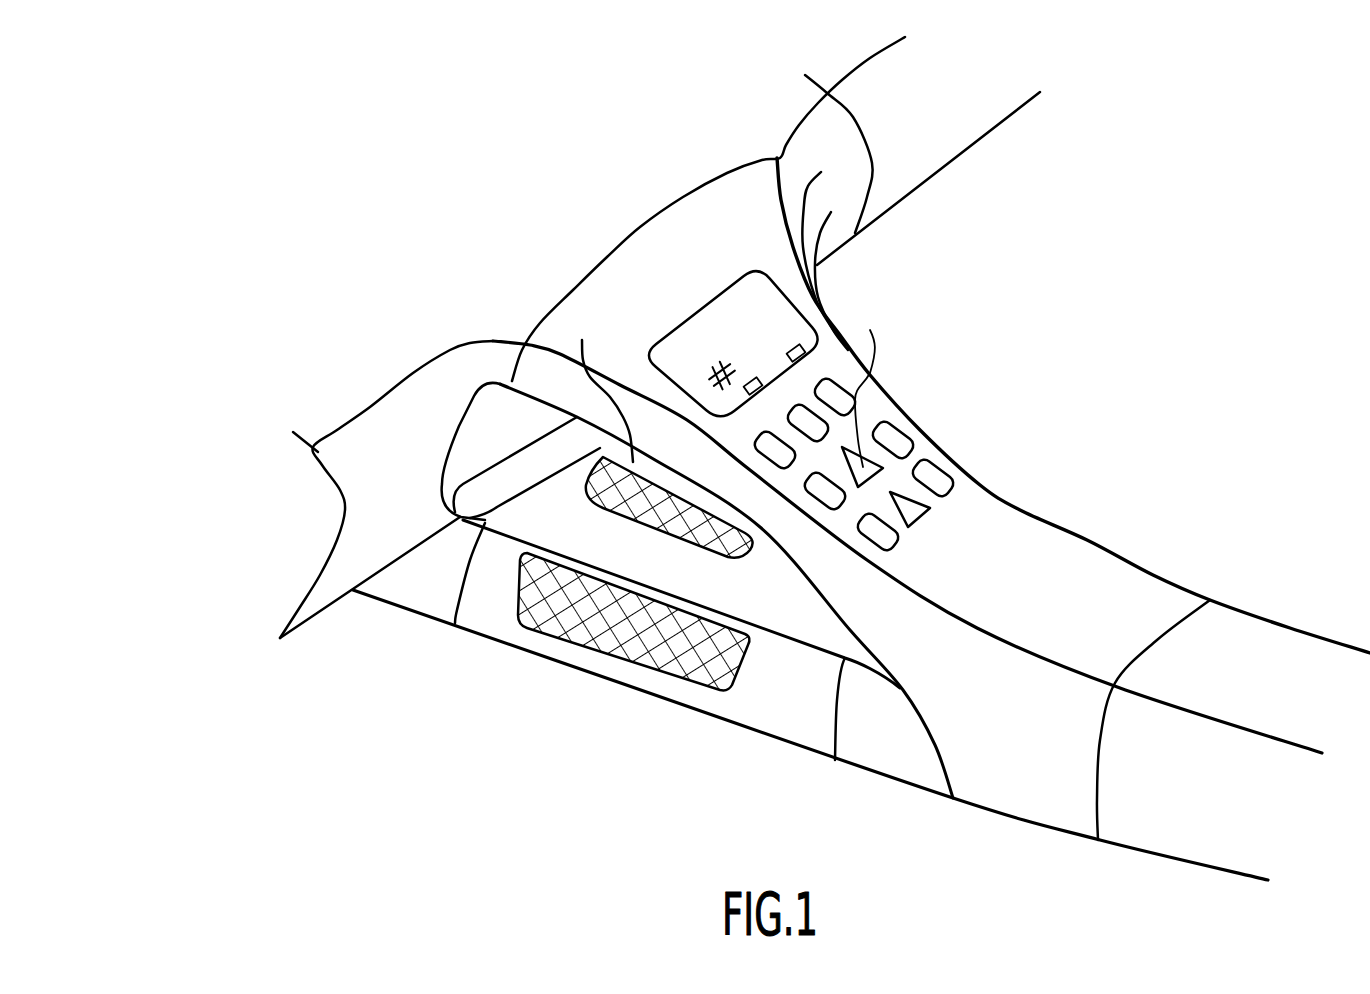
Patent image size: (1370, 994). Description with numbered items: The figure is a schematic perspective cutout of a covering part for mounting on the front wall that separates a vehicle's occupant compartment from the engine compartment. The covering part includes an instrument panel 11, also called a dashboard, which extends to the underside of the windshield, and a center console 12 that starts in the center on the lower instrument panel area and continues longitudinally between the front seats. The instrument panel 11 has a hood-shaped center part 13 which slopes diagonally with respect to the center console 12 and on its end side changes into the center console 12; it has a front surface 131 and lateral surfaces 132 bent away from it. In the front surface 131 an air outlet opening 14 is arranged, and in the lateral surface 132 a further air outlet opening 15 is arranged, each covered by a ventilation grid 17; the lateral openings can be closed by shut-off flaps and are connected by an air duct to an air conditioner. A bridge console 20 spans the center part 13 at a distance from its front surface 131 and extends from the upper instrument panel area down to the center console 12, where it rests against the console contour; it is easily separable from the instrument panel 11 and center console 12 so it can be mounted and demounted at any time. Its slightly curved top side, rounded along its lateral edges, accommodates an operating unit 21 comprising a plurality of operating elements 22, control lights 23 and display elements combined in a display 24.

The instrument panel 11 is at (917, 163).
The center console 12 is at (1283, 657).
The hood-shaped center part 13 is at (606, 688).
The front surface 131 is at (777, 600).
The lateral surface 132 is at (757, 700).
The air outlet opening 14 is at (597, 507).
The air outlet opening 15 is at (553, 640).
The ventilation grid 17 is at (632, 727).
The bridge console 20 is at (1010, 518).
The operating unit 21 is at (888, 380).
The operating elements 22 is at (828, 411).
The control lights 23 is at (804, 415).
The display 24 is at (700, 318).